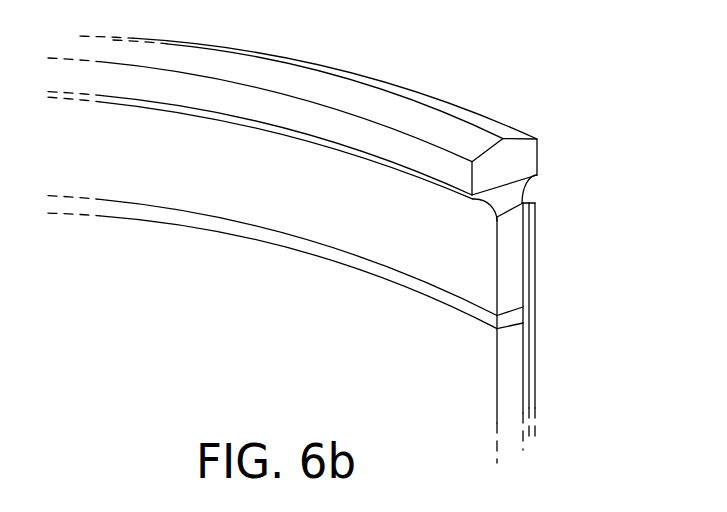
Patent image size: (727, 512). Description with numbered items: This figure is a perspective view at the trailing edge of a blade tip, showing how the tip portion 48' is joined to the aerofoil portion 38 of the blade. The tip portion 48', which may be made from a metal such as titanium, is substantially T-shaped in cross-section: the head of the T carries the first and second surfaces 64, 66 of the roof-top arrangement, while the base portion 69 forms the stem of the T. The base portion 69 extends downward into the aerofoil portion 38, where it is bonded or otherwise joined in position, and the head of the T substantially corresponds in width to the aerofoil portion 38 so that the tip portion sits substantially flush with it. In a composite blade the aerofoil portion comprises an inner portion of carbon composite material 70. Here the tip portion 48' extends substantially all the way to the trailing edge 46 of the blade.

The second surface 66 is at (418, 120).
The first surface 64 is at (490, 127).
The tip portion 48' is at (540, 167).
The inner portion of carbon composite material 70 is at (284, 316).
The base portion 69 is at (512, 258).
The trailing edge 46 is at (536, 354).
The aerofoil portion 38 is at (483, 387).